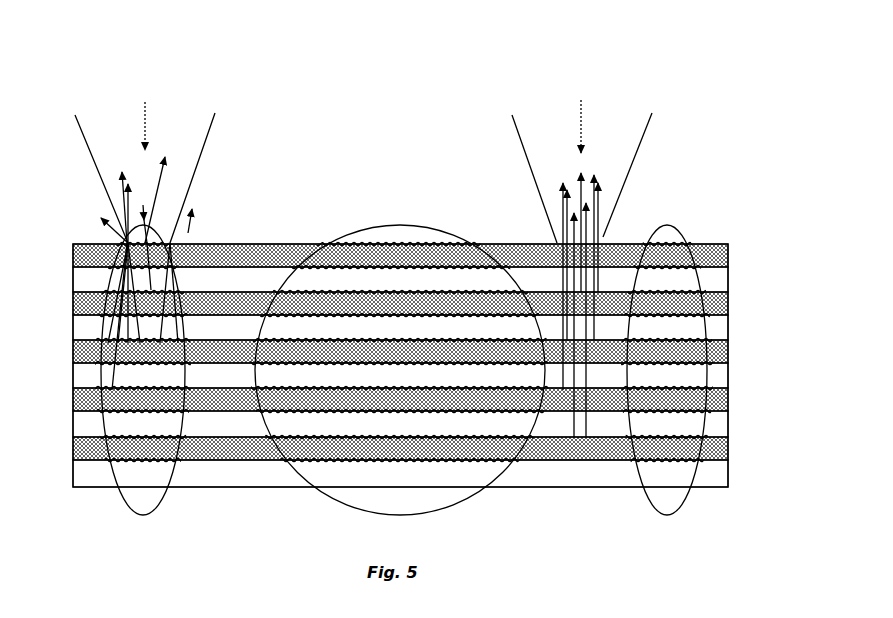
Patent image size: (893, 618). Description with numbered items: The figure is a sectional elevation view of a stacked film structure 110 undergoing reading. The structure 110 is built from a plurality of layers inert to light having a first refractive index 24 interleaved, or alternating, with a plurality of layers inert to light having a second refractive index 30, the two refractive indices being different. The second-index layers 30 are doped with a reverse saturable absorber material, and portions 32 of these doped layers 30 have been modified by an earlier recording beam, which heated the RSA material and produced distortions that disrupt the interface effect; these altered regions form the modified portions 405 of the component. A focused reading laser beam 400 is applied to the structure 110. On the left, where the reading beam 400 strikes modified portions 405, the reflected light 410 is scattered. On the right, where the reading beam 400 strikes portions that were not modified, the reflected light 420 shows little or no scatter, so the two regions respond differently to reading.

The stacked film structure 110 is at (708, 135).
The layers inert to light having a second refractive index 30 is at (80, 257).
The layers inert to light having a first refractive index 24 is at (86, 286).
The modified portions of the doped second layer 32 is at (120, 390).
The modified portions of the component 405 is at (165, 493).
The focused reading laser beam 400 is at (147, 133).
The scattered reflected light 410 is at (162, 185).
The reflected light with little or no scatter 420 is at (601, 228).